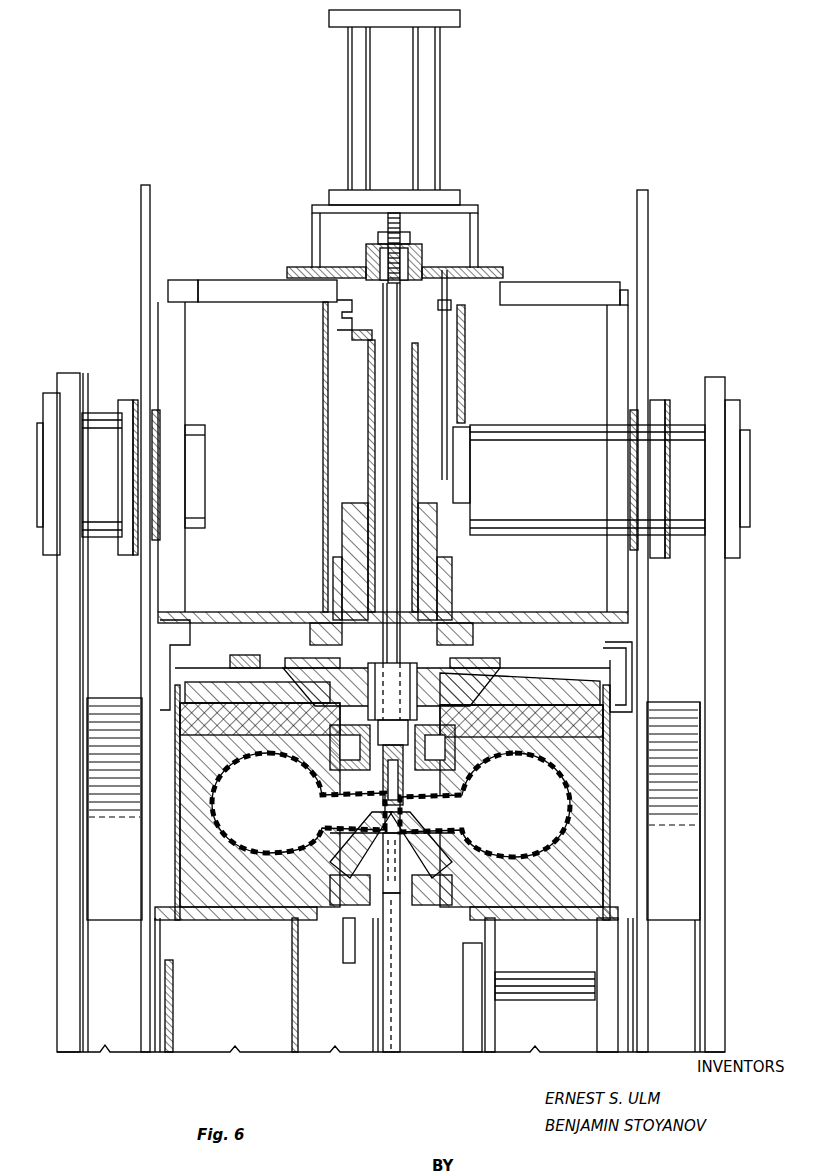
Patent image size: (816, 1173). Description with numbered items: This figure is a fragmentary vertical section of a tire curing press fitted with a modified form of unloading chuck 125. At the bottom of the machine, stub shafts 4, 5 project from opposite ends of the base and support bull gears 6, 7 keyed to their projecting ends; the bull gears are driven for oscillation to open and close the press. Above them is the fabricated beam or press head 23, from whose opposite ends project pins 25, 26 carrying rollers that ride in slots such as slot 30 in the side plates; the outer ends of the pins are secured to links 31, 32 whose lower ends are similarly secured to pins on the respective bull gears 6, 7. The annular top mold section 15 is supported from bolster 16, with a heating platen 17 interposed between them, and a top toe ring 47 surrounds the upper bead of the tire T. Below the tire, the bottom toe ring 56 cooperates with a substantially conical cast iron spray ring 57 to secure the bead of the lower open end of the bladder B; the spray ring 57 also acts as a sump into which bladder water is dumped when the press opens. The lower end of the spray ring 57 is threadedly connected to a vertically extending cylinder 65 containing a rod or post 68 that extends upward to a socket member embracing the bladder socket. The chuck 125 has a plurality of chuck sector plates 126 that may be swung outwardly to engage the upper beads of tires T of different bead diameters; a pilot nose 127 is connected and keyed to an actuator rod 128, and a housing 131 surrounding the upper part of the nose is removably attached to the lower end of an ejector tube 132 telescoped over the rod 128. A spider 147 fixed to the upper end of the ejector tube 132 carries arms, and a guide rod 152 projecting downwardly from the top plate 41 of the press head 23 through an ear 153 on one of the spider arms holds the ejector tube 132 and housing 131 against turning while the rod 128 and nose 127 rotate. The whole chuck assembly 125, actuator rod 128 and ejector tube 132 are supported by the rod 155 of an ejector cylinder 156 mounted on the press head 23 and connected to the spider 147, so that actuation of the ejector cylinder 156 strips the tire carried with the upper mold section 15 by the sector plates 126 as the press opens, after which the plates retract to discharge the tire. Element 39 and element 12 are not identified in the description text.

The ejector cylinder 156 is at (432, 109).
The rod 155 is at (400, 220).
The press head 23 is at (228, 272).
The top plate 41 is at (572, 282).
The slot 30 is at (648, 250).
The ear 153 is at (450, 300).
The spider 147 is at (362, 312).
The guide rod 152 is at (447, 370).
The actuator rod 128 is at (390, 388).
The ejector tube 132 is at (368, 438).
The pin 25 is at (205, 438).
The pin 26 is at (552, 425).
The right shaft end 39 is at (750, 438).
The bolster 16 is at (610, 680).
The heating platen 17 is at (600, 712).
The housing 131 is at (330, 672).
The top toe ring 47 is at (470, 746).
The top mold section 15 is at (600, 766).
The tire T is at (200, 780).
The chuck 125 is at (330, 790).
The bottom toe ring 56 is at (342, 850).
The chuck sector plates 126 is at (455, 785).
The pilot nose 127 is at (418, 805).
The bladder B is at (550, 815).
The left mold section 12 is at (185, 845).
The link 31 is at (57, 805).
The link 32 is at (725, 808).
The bull gear 6 is at (82, 947).
The stub shaft 4 is at (173, 975).
The stub shaft 5 is at (553, 972).
The bull gear 7 is at (708, 957).
The spray ring 57 is at (430, 910).
The post 68 is at (410, 965).
The cylinder 65 is at (398, 1007).